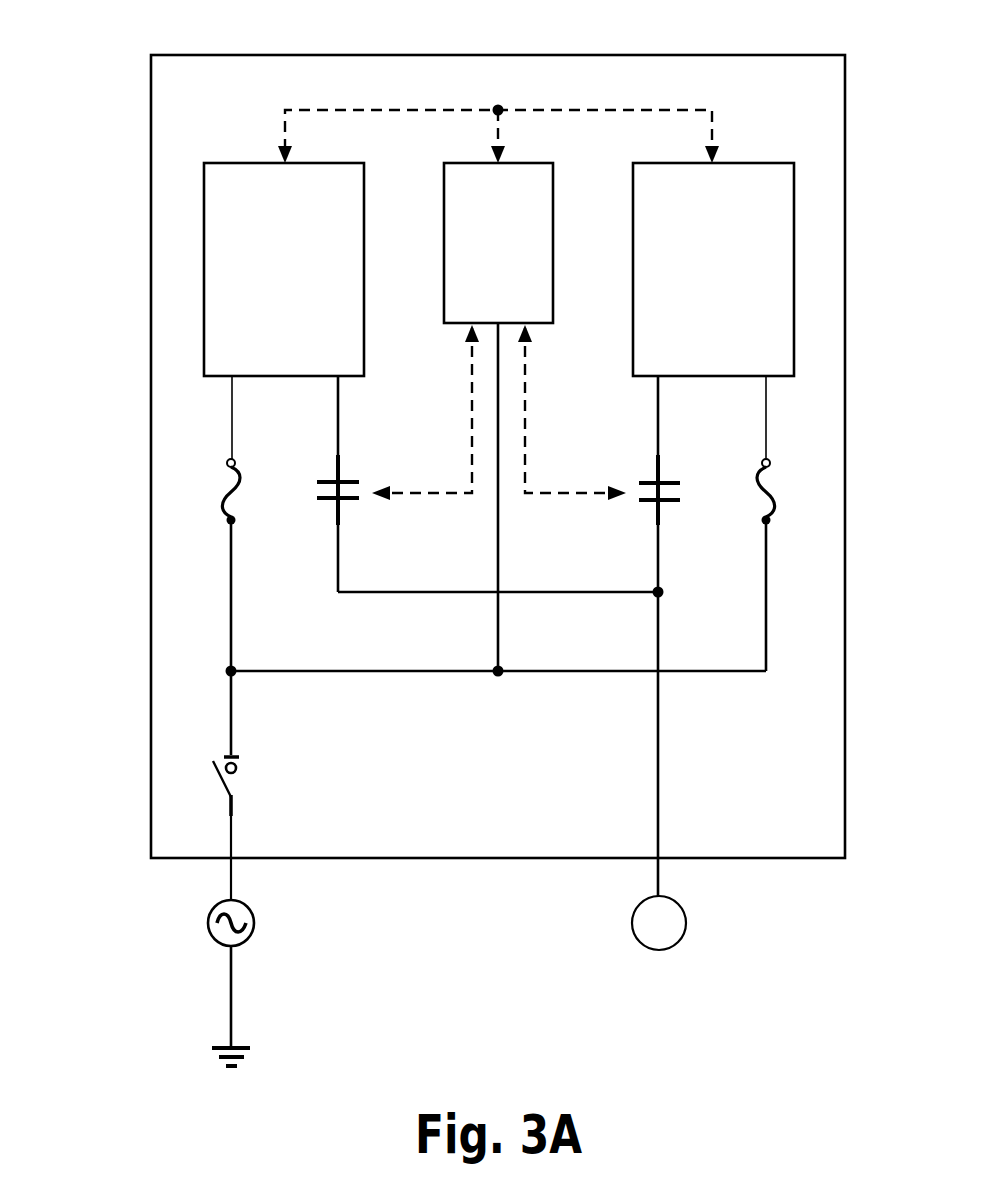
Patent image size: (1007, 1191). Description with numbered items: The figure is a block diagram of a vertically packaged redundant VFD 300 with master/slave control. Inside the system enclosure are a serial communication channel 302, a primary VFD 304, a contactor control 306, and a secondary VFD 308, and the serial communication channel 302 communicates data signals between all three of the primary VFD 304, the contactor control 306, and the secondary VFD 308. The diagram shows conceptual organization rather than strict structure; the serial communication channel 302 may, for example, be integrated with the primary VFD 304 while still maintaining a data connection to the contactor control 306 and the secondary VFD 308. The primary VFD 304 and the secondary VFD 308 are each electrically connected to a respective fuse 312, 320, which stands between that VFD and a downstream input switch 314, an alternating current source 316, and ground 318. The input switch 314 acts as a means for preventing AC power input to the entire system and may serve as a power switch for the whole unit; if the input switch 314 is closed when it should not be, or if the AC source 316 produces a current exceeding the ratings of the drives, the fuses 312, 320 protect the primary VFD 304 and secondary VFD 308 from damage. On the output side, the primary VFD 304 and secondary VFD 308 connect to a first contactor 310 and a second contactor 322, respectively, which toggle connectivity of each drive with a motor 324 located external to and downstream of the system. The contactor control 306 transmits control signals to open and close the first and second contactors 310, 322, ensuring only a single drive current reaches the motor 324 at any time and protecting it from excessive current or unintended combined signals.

The vertically packaged redundant VFD 300 is at (799, 868).
The serial communication channel 302 is at (498, 103).
The primary VFD 304 is at (284, 269).
The contactor control 306 is at (498, 243).
The secondary VFD 308 is at (713, 269).
The first contactor 310 is at (332, 506).
The fuse 312 is at (219, 500).
The input switch 314 is at (200, 772).
The alternating current (AC) source 316 is at (209, 930).
The ground 318 is at (200, 1054).
The fuse 320 is at (777, 492).
The second contactor 322 is at (669, 506).
The motor 324 is at (680, 940).